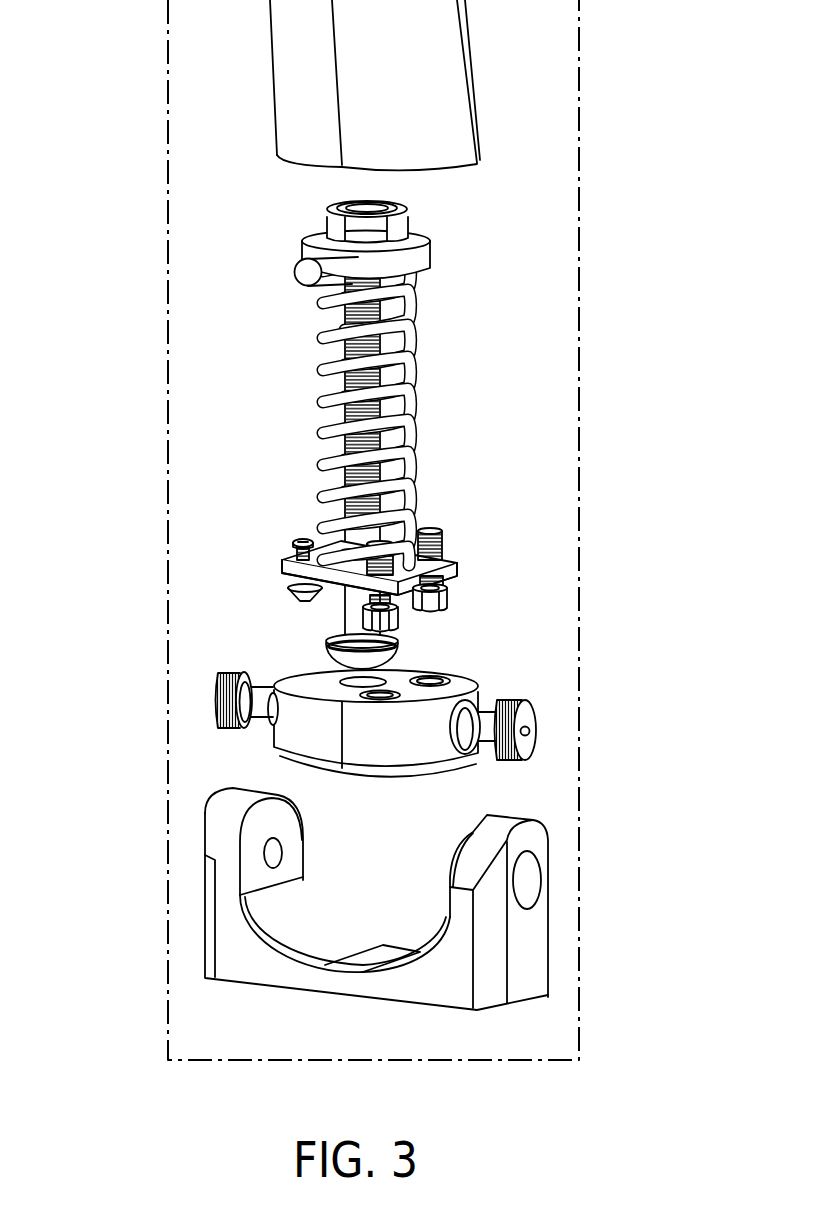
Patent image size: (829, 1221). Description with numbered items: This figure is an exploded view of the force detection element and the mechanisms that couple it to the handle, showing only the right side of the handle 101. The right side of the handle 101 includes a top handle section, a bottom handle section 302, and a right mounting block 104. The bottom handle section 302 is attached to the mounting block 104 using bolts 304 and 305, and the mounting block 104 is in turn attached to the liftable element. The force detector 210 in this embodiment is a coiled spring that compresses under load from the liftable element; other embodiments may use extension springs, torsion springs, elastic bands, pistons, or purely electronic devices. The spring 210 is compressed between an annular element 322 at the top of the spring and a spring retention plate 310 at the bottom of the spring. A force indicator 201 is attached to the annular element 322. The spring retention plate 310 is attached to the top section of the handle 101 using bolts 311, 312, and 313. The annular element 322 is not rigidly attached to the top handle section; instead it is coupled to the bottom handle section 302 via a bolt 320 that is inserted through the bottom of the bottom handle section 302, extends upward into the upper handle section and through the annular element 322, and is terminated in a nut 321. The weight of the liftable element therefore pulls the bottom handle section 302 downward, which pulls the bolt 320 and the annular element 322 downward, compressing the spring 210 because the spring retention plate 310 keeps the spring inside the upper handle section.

The handle 101 is at (432, 132).
The right mounting block 104 is at (523, 937).
The force indicator 201 is at (297, 263).
The force detector 210 is at (320, 335).
The bottom handle section 302 is at (408, 738).
The bolt 304 is at (253, 710).
The bolt 305 is at (537, 735).
The spring retention plate 310 is at (440, 560).
The bolt 311 is at (290, 598).
The bolt 312 is at (400, 627).
The bolt 313 is at (443, 598).
The bolt 320 is at (358, 632).
The nut 321 is at (355, 230).
The annular element 322 is at (393, 258).